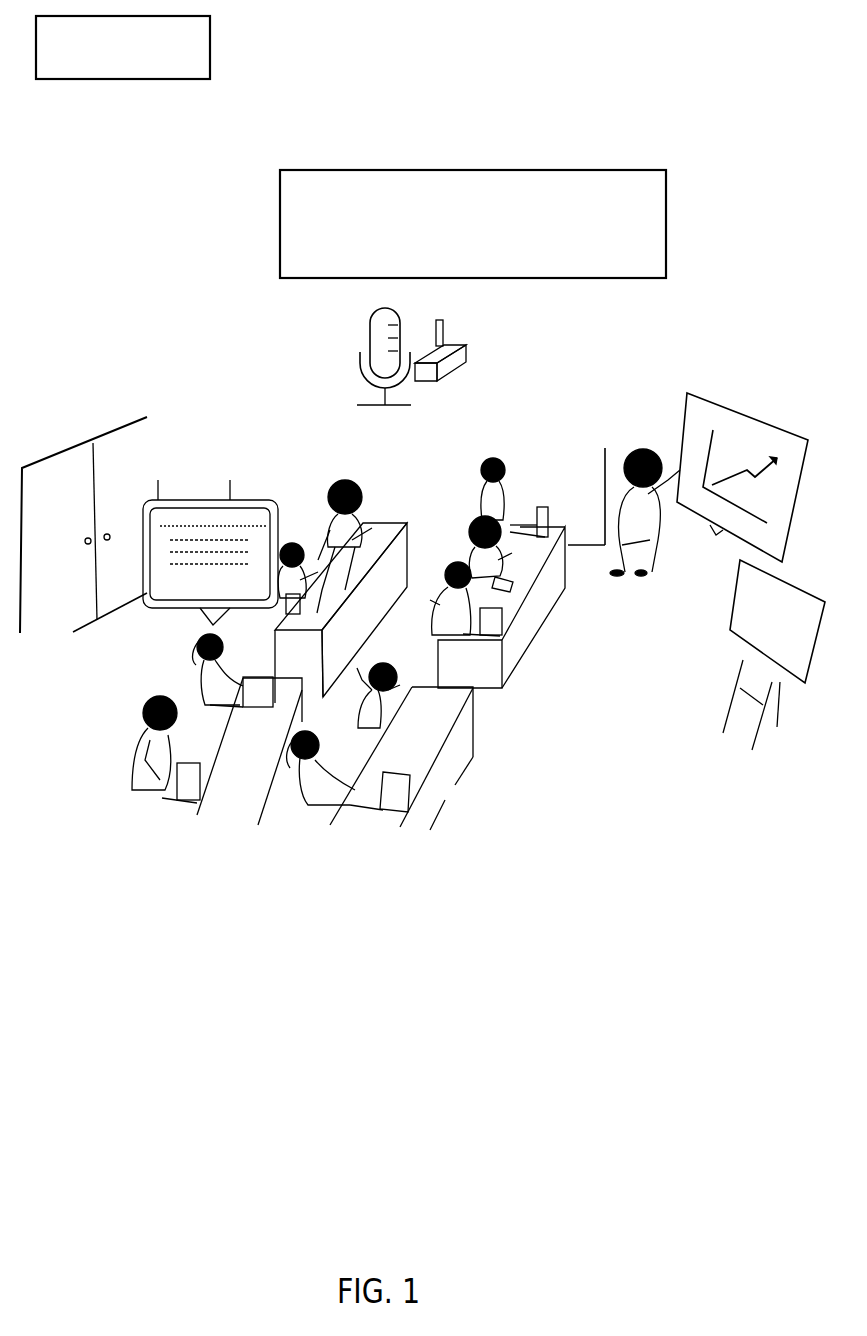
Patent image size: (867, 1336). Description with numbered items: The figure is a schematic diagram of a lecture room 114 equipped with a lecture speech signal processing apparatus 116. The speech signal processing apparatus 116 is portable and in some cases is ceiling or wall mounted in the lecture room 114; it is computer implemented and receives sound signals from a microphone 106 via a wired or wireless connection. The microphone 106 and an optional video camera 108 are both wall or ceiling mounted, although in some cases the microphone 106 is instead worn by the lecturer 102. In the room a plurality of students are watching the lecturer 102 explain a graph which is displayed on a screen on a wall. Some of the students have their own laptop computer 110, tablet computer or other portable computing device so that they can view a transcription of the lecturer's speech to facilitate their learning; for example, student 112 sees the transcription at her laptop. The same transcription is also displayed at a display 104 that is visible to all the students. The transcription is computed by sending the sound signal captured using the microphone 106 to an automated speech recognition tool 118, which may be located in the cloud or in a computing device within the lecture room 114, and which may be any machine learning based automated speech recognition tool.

The lecturer 102 is at (662, 432).
The display 104 is at (814, 668).
The microphone 106 is at (370, 320).
The video camera 108 is at (539, 348).
The laptop computer 110 is at (444, 765).
The student 112 is at (251, 590).
The lecture room 114 is at (636, 878).
The speech signal processing apparatus 116 is at (361, 218).
The automated speech recognition tool 118 is at (118, 66).